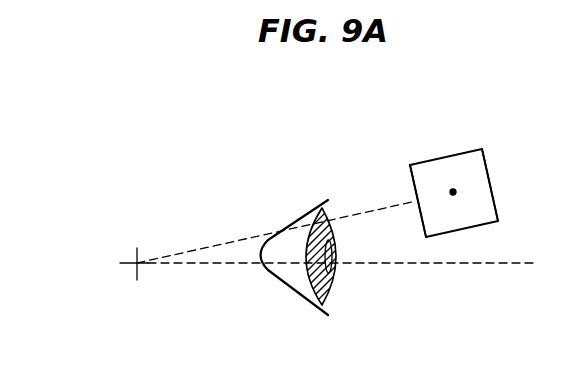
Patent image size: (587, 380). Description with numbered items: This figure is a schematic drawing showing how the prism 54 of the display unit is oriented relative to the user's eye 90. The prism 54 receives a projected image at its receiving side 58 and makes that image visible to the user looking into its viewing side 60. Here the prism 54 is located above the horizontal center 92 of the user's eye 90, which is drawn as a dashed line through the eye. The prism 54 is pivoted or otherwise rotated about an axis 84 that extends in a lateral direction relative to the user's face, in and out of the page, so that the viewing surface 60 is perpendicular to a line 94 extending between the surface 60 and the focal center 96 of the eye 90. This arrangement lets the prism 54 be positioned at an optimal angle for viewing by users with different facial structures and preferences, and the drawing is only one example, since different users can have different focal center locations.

The prism 54 is at (457, 143).
The receiving side 58 is at (482, 187).
The viewing side 60 is at (412, 187).
The axis 84 is at (455, 193).
The user's eye 90 is at (342, 292).
The horizontal center 92 is at (505, 263).
The line 94 is at (228, 240).
The focal center 96 is at (138, 265).